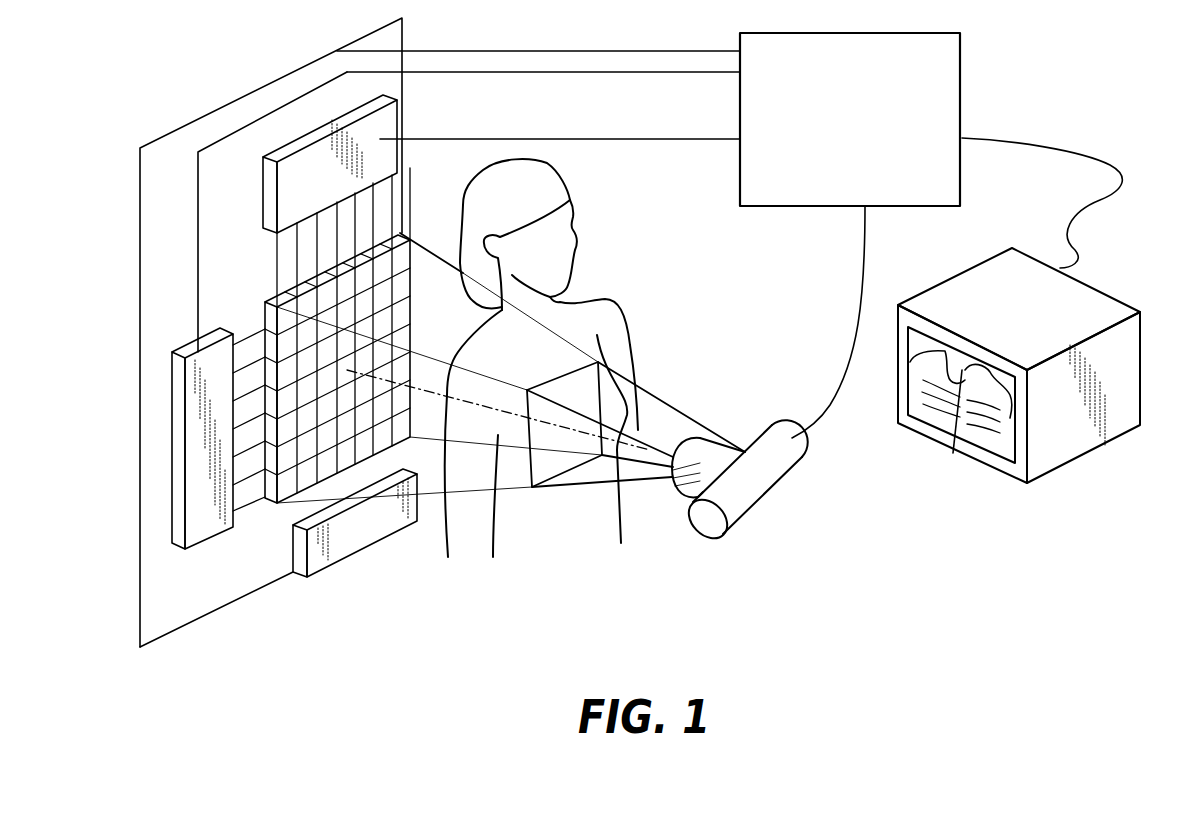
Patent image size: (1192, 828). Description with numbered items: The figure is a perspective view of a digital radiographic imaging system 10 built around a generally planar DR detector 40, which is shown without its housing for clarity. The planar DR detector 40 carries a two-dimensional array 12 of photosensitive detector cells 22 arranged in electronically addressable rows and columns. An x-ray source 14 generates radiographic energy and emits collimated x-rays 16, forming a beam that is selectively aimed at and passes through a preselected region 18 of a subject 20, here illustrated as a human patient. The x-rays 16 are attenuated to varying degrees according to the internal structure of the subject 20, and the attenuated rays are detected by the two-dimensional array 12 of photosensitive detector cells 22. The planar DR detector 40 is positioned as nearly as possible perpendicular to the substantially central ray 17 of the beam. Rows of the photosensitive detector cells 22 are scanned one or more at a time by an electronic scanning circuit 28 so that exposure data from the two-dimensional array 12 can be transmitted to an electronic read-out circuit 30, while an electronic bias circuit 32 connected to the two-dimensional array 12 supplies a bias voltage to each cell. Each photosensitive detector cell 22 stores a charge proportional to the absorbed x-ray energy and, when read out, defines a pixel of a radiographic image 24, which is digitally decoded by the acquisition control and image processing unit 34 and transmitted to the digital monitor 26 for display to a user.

The digital radiographic imaging system 10 is at (1121, 100).
The two-dimensional array 12 is at (403, 232).
The x-ray source 14 is at (790, 482).
The x-rays 16 is at (660, 402).
The central ray 17 is at (645, 452).
The preselected region 18 is at (570, 362).
The subject 20 is at (593, 300).
The photosensitive detector cells 22 is at (303, 302).
The radiographic image 24 is at (967, 430).
The digital monitor 26 is at (1082, 280).
The electronic scanning circuit 28 is at (202, 528).
The electronic read-out circuit 30 is at (308, 161).
The electronic bias circuit 32 is at (345, 547).
The acquisition control and image processing unit 34 is at (962, 87).
The planar DR detector 40 is at (110, 131).